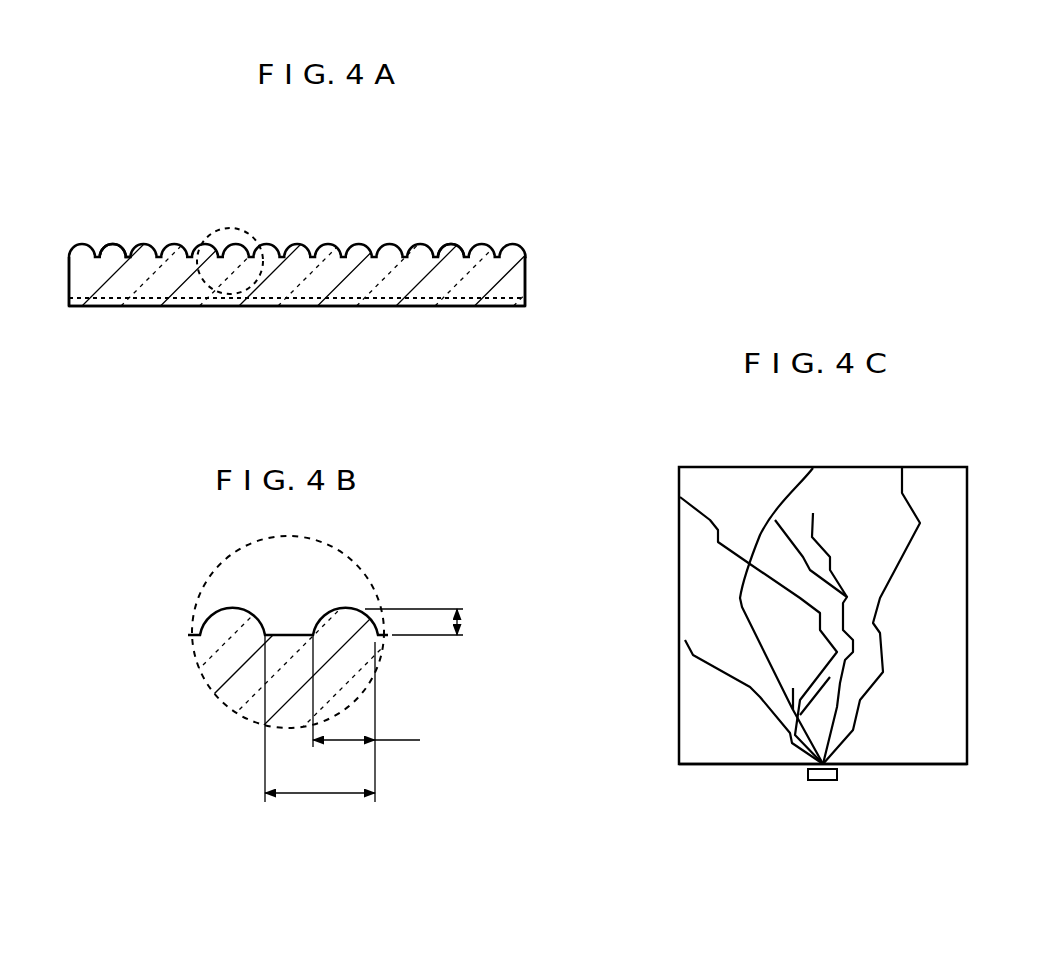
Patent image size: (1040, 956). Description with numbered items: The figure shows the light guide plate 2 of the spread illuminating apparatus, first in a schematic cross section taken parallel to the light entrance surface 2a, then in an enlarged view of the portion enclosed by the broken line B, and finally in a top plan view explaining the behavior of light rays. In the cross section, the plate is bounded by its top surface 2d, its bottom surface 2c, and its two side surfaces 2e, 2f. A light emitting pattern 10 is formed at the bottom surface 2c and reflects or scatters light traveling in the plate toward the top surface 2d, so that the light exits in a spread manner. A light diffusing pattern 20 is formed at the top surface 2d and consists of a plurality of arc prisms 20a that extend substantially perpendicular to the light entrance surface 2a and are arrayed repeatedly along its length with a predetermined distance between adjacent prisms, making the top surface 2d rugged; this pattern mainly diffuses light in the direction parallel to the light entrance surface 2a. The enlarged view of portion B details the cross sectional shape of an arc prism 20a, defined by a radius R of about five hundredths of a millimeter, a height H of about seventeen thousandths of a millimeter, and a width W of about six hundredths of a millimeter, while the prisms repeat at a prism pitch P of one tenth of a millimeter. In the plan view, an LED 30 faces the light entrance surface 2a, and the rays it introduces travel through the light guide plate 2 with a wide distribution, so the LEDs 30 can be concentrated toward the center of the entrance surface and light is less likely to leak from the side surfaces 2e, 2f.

In FIG. 4A, the light guide plate 2 is at (405, 172).
In FIG. 4C, the light guide plate 2 is at (886, 455).
In FIG. 4C, the light entrance surface 2a is at (898, 765).
In FIG. 4A, the bottom surface 2c is at (432, 306).
In FIG. 4A, the top surface 2d is at (133, 244).
In FIG. 4A, the side surface 2e is at (69, 271).
In FIG. 4A, the side surface 2f is at (525, 270).
In FIG. 4A, the light emitting pattern 10 is at (347, 313).
In FIG. 4A, the light diffusing pattern 20 is at (448, 238).
In FIG. 4A, the arc prism 20a is at (247, 240).
In FIG. 4B, the arc prism 20a is at (337, 623).
In FIG. 4C, the LED 30 is at (814, 780).
In FIG. 4A, the broken line portion B is at (207, 283).
In FIG. 4B, the broken line portion B is at (296, 635).
In FIG. 4B, the radius R is at (236, 640).
In FIG. 4B, the height H is at (425, 622).
In FIG. 4B, the width W is at (342, 718).
In FIG. 4B, the prism pitch P is at (320, 776).